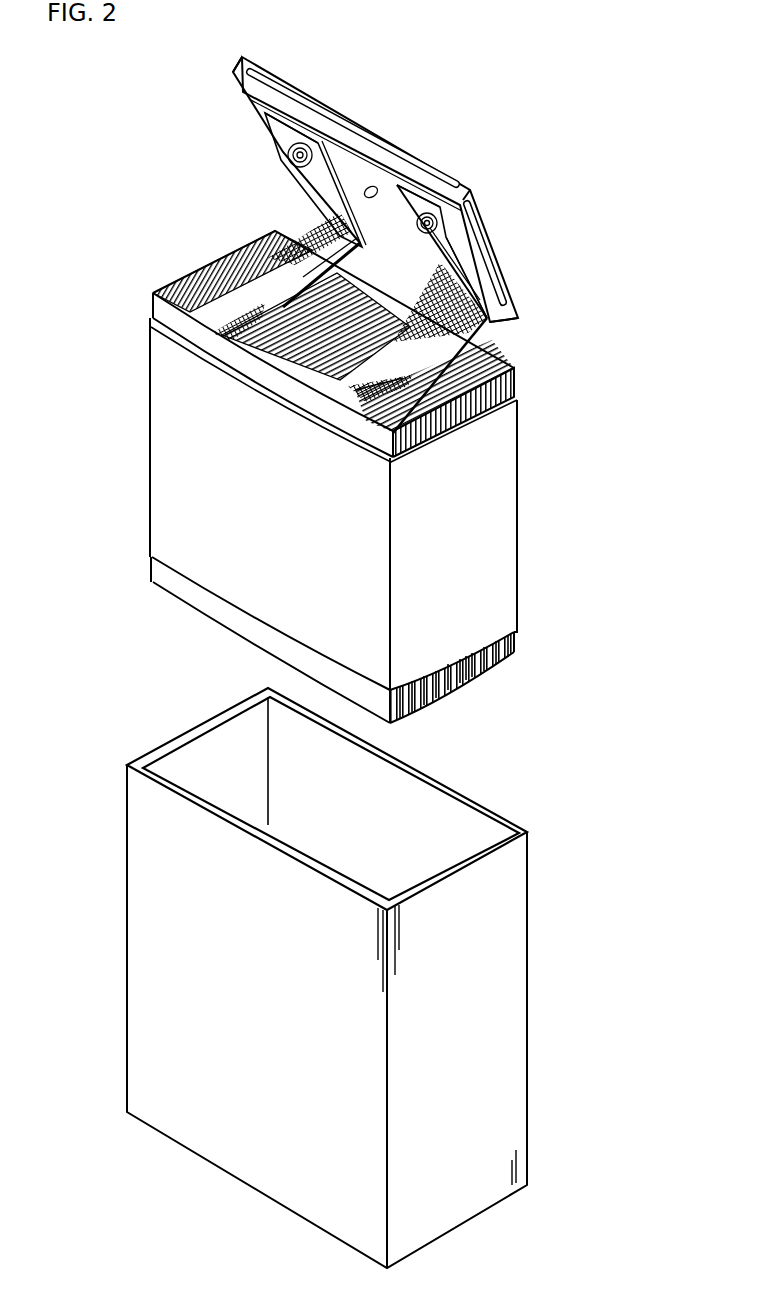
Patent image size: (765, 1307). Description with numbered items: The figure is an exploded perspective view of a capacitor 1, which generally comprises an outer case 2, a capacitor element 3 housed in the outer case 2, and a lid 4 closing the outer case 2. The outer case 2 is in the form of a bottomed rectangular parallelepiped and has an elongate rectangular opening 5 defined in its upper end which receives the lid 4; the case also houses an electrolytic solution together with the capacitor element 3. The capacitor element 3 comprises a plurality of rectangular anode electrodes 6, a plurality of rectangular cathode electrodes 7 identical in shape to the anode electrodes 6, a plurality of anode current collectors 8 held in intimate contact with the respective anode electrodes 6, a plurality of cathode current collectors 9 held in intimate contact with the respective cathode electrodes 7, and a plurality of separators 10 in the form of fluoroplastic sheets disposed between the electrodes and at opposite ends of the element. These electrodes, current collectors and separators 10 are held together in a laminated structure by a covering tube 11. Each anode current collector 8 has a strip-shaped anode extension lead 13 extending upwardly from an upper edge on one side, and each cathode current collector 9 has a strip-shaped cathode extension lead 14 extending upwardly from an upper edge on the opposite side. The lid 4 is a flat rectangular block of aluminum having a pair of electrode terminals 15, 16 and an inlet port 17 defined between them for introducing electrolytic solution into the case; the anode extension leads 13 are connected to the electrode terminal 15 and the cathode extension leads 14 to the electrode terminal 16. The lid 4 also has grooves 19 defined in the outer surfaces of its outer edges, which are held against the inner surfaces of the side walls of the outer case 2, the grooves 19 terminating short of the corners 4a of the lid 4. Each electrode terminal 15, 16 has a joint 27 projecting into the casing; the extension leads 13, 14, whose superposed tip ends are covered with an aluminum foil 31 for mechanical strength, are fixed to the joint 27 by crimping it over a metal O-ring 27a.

The capacitor unit 1 is at (582, 365).
The outer case 2 is at (497, 957).
The capacitor element 3 is at (520, 634).
The lid 4 is at (473, 194).
The corners of the lid 4a is at (230, 62).
The opening 5 is at (440, 842).
The anode electrodes 6 is at (473, 661).
The cathode electrodes 7 is at (490, 655).
The anode current collectors 8 is at (408, 677).
The cathode current collectors 9 is at (465, 650).
The separators 10 is at (515, 383).
The covering tube 11 is at (150, 457).
The anode extension lead 13 is at (322, 194).
The cathode extension lead 14 is at (490, 323).
The electrode terminal 15 is at (283, 152).
The electrode terminal 16 is at (431, 216).
The inlet port 17 is at (372, 198).
The grooves 19 is at (357, 140).
The joint 27 is at (271, 183).
The O-ring 27a is at (288, 148).
The aluminum foil 31 is at (317, 173).